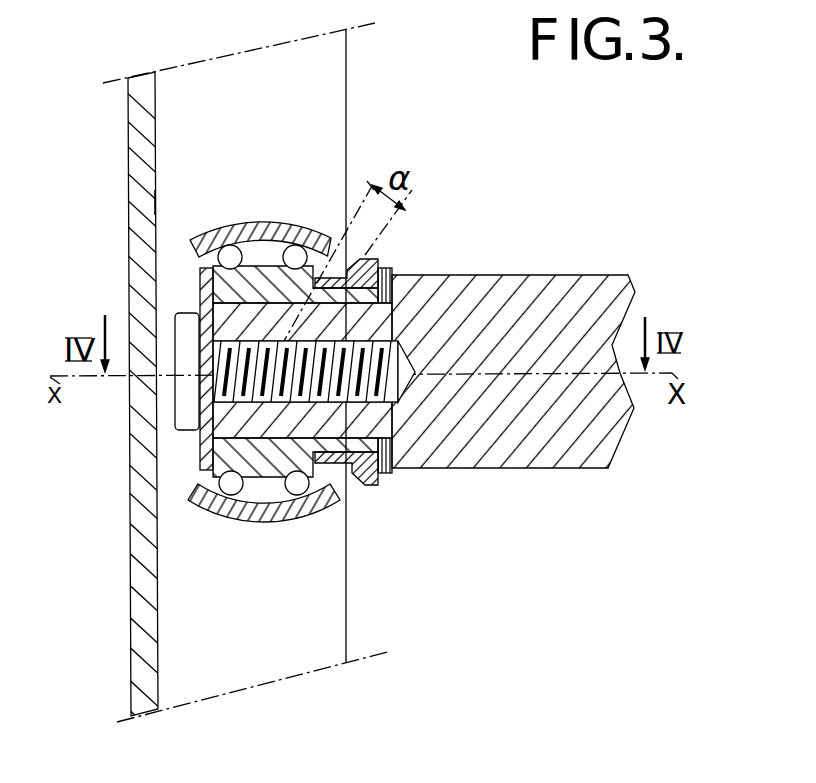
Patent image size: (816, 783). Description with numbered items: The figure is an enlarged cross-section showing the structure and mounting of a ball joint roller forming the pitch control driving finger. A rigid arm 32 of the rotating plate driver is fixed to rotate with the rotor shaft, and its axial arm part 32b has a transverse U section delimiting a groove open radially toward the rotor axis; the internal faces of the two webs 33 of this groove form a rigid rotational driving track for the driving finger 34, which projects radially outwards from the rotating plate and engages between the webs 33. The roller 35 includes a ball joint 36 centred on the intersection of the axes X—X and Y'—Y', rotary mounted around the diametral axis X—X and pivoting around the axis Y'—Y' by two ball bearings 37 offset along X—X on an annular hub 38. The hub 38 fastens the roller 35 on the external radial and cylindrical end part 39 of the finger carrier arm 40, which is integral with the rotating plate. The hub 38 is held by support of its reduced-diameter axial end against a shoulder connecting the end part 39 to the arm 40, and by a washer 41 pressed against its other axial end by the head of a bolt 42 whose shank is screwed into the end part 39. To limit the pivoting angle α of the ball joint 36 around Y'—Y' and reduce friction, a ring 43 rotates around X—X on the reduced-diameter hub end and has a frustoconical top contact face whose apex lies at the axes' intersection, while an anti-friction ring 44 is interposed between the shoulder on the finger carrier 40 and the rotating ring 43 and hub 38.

The rigid arm 32 is at (120, 579).
The axial arm part 32b is at (145, 200).
The web 33 is at (215, 103).
The driving finger 34 is at (397, 253).
The roller 35 is at (293, 207).
The ball joint 36 is at (188, 243).
The ball bearing 37 is at (229, 479).
The annular hub 38 is at (250, 292).
The end part 39 is at (235, 428).
The finger carrier arm 40 is at (565, 327).
The washer 41 is at (205, 465).
The bolt 42 is at (188, 402).
The ring 43 is at (384, 474).
The anti-friction ring 44 is at (387, 268).